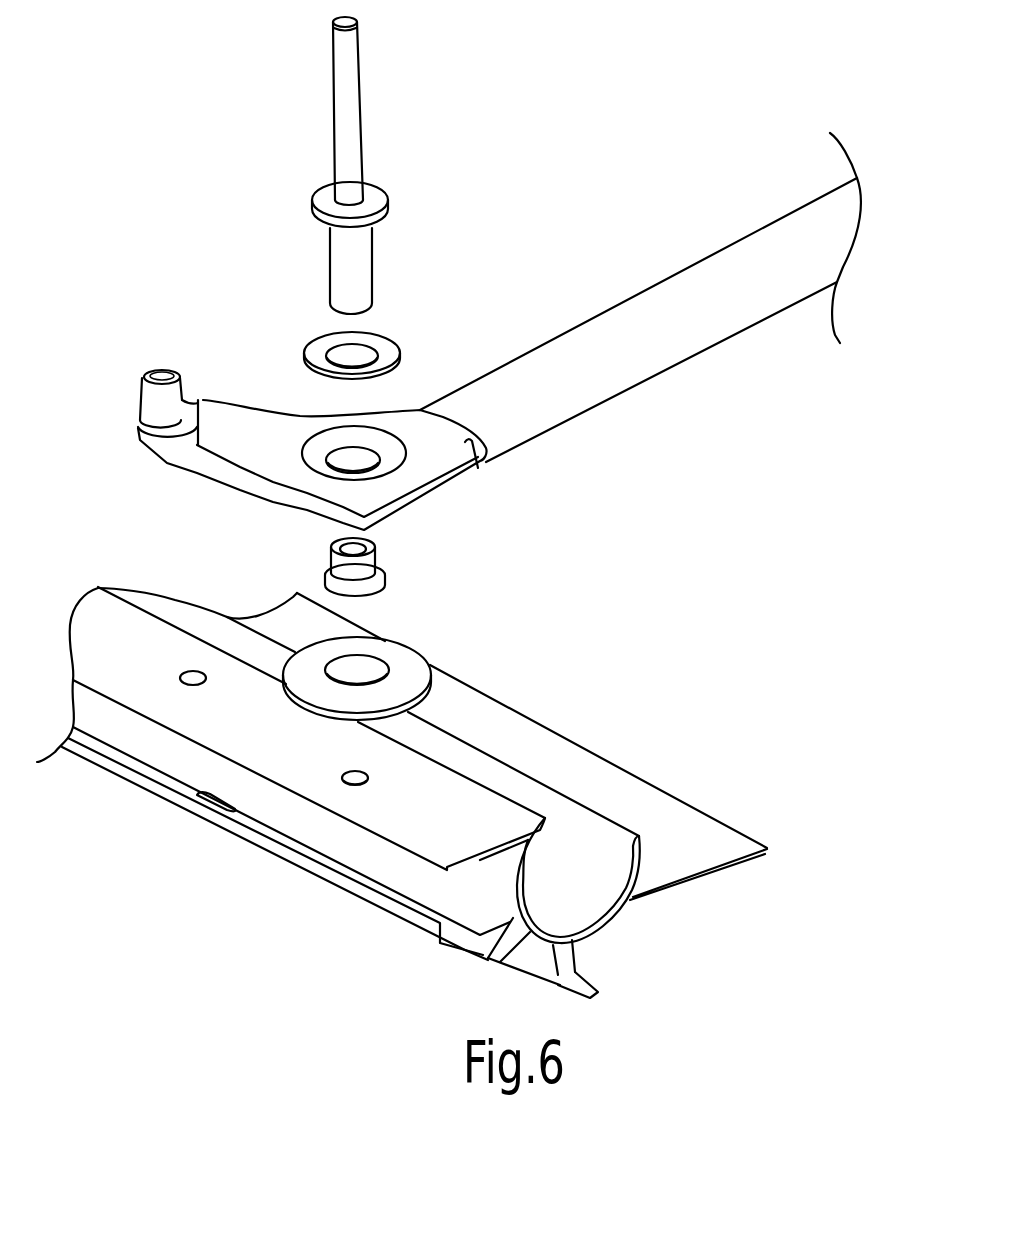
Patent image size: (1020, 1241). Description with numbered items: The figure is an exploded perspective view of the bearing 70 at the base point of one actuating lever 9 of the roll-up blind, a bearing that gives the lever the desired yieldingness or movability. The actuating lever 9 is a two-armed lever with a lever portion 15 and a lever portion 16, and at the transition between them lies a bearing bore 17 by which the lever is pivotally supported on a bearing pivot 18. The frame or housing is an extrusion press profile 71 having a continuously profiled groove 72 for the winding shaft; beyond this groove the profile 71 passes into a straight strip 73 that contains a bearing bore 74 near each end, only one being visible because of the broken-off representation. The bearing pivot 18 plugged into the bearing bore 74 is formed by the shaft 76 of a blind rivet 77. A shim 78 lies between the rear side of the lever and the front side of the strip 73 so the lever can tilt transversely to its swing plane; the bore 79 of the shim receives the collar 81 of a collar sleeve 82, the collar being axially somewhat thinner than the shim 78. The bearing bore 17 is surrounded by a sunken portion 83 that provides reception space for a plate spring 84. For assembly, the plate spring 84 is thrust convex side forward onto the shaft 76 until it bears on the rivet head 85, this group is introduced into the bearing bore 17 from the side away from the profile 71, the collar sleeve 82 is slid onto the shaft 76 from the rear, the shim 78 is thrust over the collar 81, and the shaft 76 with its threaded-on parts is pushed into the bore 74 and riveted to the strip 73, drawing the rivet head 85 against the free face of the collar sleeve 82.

The actuating lever 9 is at (635, 237).
The lever portion 15 is at (713, 293).
The lever portion 16 is at (240, 430).
The bearing bore 17 is at (378, 461).
The bearing pivot 18 is at (397, 262).
The bearing 70 is at (528, 253).
The extrusion press profile 71 is at (753, 822).
The profiled groove 72 is at (567, 905).
The straight strip 73 is at (430, 831).
The bearing bore 74 is at (355, 784).
The shaft 76 is at (330, 253).
The blind rivet 77 is at (313, 175).
The shim 78 is at (410, 672).
The bore 79 is at (352, 684).
The collar 81 is at (387, 580).
The collar sleeve 82 is at (293, 558).
The sunken portion 83 is at (386, 438).
The plate spring 84 is at (380, 352).
The rivet head 85 is at (370, 198).